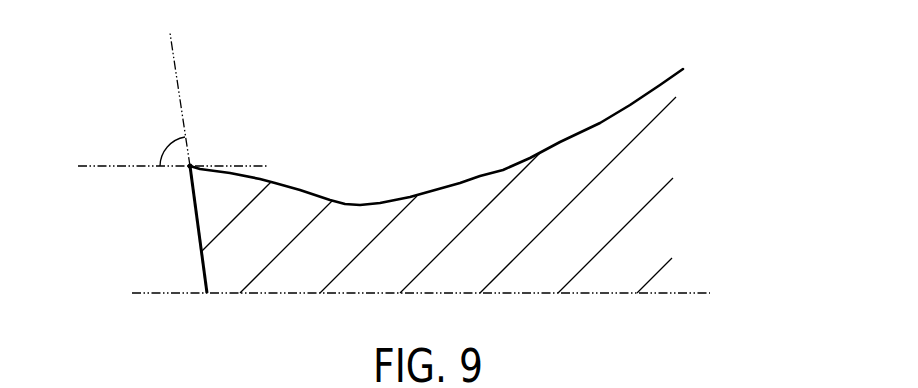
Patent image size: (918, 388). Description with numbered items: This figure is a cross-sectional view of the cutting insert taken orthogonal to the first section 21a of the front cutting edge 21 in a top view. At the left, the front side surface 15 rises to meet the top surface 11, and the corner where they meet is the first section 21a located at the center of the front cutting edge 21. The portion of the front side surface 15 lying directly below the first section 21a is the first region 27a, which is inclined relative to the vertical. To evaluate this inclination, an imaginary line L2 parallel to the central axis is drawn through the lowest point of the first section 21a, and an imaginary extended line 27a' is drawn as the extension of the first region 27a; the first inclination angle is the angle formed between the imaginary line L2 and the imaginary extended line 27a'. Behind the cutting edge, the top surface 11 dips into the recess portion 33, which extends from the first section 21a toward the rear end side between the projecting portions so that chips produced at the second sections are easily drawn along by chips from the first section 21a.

The imaginary extended line 27a' is at (174, 86).
The front cutting edge 21 is at (236, 107).
The first section 21a is at (191, 165).
The top surface 11 is at (436, 125).
The recess portion 33 is at (350, 203).
The front side surface 15 is at (124, 229).
The first region 27a is at (198, 229).
The imaginary line L2 is at (154, 167).